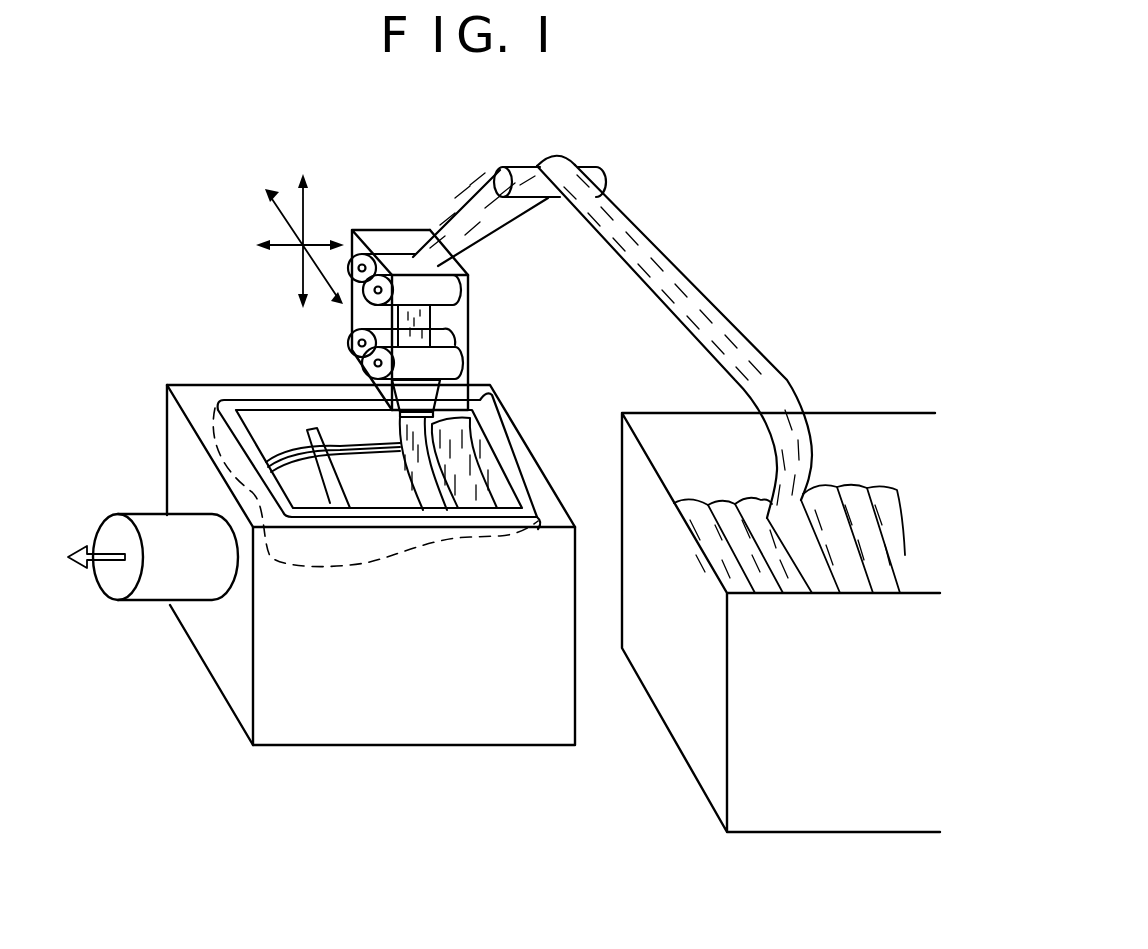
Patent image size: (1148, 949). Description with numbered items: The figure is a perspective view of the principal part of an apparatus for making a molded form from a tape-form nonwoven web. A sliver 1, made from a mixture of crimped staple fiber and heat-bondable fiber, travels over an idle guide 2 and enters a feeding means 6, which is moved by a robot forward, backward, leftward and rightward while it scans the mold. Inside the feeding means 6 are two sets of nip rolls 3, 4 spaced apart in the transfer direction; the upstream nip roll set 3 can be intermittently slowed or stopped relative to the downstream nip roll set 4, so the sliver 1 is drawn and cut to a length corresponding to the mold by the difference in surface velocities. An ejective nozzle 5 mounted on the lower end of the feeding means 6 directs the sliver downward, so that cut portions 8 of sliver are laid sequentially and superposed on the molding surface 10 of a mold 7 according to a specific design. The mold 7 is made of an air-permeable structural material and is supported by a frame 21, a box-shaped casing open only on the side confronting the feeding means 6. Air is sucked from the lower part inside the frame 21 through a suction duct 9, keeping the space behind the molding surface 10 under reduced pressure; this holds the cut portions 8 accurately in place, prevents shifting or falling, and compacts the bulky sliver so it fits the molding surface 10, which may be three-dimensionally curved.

The sliver 1 is at (682, 292).
The idle guide 2 is at (612, 180).
The nip roll set 3 is at (453, 297).
The nip roll set 4 is at (457, 363).
The ejective nozzle 5 is at (427, 398).
The feeding means 6 is at (383, 230).
The mold 7 is at (255, 407).
The cut portions of sliver 8 is at (473, 457).
The suction duct 9 is at (153, 587).
The molding surface 10 is at (367, 470).
The frame 21 is at (313, 727).